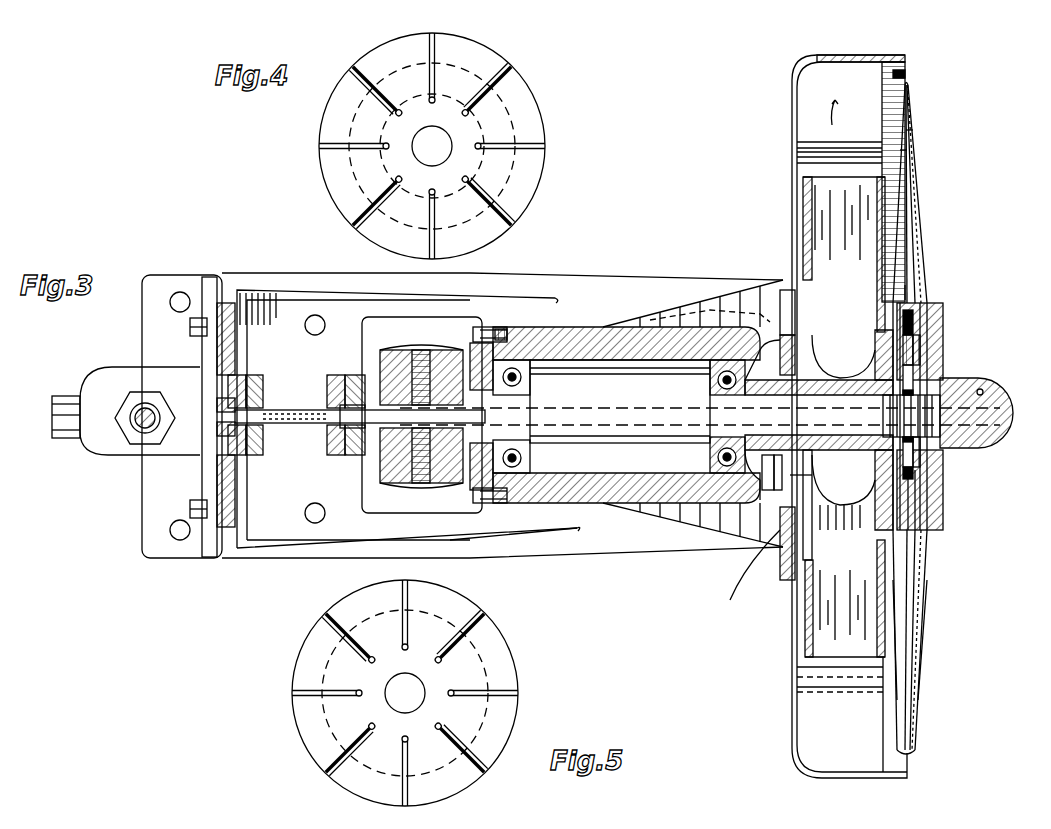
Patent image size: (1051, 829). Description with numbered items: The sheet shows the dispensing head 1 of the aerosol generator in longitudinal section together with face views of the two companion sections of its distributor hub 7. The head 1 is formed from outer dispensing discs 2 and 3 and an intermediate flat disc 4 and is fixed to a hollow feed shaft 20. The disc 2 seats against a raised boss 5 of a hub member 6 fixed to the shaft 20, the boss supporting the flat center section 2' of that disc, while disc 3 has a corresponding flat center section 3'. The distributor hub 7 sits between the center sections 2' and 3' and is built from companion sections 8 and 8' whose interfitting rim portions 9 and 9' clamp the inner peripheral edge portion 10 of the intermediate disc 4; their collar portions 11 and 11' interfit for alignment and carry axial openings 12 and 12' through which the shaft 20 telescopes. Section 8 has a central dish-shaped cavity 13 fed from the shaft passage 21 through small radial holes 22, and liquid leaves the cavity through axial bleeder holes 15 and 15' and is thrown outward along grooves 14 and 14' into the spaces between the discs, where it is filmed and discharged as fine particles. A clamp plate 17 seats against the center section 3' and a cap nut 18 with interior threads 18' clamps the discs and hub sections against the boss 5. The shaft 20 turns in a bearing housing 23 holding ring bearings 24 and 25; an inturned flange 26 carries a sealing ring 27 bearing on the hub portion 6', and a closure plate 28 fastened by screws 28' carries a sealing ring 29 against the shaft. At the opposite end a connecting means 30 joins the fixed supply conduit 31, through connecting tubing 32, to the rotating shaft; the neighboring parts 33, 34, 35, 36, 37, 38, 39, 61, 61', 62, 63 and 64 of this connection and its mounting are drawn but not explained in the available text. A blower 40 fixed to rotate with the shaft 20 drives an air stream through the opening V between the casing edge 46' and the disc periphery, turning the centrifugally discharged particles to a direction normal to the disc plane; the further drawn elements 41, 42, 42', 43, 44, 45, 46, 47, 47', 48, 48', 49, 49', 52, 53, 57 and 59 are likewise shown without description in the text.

In FIG. 3, the dispensing head 1 is at (930, 177).
In FIG. 3, the exterior dispensing disc 2 is at (929, 417).
In FIG. 3, the flat center section 2' is at (843, 356).
In FIG. 3, the exterior dispensing disc 3 is at (933, 417).
In FIG. 3, the flat center section 3' is at (939, 322).
In FIG. 3, the intermediate dispensing disc 4 is at (924, 232).
In FIG. 3, the raised boss 5 is at (878, 290).
In FIG. 3, the hub member 6 is at (819, 430).
In FIG. 3, the hub portion 6' is at (764, 420).
In FIG. 3, the distributor hub 7 is at (918, 289).
In FIG. 4, the distributor hub section 8 is at (438, 146).
In FIG. 3, the distributor hub section 8 is at (864, 620).
In FIG. 5, the distributor hub section 8' is at (413, 693).
In FIG. 3, the distributor hub section 8' is at (936, 628).
In FIG. 4, the rim portion 9 is at (443, 146).
In FIG. 3, the rim portion 9 is at (876, 500).
In FIG. 5, the rim portion 9' is at (417, 693).
In FIG. 3, the rim portion 9' is at (943, 500).
In FIG. 3, the inner peripheral edge portion 10 is at (914, 495).
In FIG. 4, the collar portion 11 is at (463, 146).
In FIG. 3, the collar portion 11 is at (941, 349).
In FIG. 5, the collar portion 11' is at (439, 693).
In FIG. 3, the collar portion 11' is at (949, 350).
In FIG. 4, the axial opening 12 is at (374, 156).
In FIG. 5, the axial opening 12' is at (341, 702).
In FIG. 4, the dish-shaped cavity 13 is at (470, 95).
In FIG. 3, the dish-shaped cavity 13 is at (893, 462).
In FIG. 4, the liquid groove 14 is at (441, 146).
In FIG. 5, the liquid groove 14' is at (410, 693).
In FIG. 3, the liquid groove 14' is at (939, 490).
In FIG. 4, the axial hole 15 is at (431, 145).
In FIG. 3, the axial hole 15 is at (876, 427).
In FIG. 5, the axial hole 15' is at (404, 692).
In FIG. 3, the axial hole 15' is at (947, 455).
In FIG. 3, the clamp plate 17 is at (944, 310).
In FIG. 3, the cap nut 18 is at (990, 413).
In FIG. 3, the interior threads 18' is at (1008, 375).
In FIG. 3, the hollow feed shaft 20 is at (614, 445).
In FIG. 3, the passage 21 is at (674, 440).
In FIG. 3, the radial holes 22 is at (884, 411).
In FIG. 3, the bearing housing 23 is at (596, 326).
In FIG. 3, the ring bearing 24 is at (530, 458).
In FIG. 3, the ring bearing 25 is at (716, 460).
In FIG. 3, the inturned flange portion 26 is at (776, 478).
In FIG. 3, the sealing ring 27 is at (774, 462).
In FIG. 3, the closure plate 28 is at (471, 411).
In FIG. 3, the screws 28' is at (511, 320).
In FIG. 3, the sealing ring 29 is at (482, 392).
In FIG. 3, the connecting device 30 is at (290, 408).
In FIG. 3, the supply conduit 31 is at (68, 396).
In FIG. 3, the connecting tubing 32 is at (282, 424).
In FIG. 3, the collar 33 is at (350, 456).
In FIG. 3, the clamp 34 is at (332, 450).
In FIG. 3, the collar 35 is at (340, 376).
In FIG. 3, the nut 36 is at (222, 434).
In FIG. 3, the bearing 37 is at (240, 378).
In FIG. 3, the mounting plate 38 is at (214, 462).
In FIG. 3, the block 39 is at (260, 378).
In FIG. 3, the blower assembly 40 is at (800, 196).
In FIG. 3, the lower inner wall 41 is at (886, 604).
In FIG. 3, the lower wall 42 is at (821, 608).
In FIG. 3, the bracket 42' is at (766, 546).
In FIG. 3, the connecting wall 43 is at (830, 628).
In FIG. 3, the opening 44 is at (836, 500).
In FIG. 3, the shroud 45 is at (790, 95).
In FIG. 3, the shroud top 46 is at (861, 44).
In FIG. 3, the casing edge 46' is at (912, 165).
In FIG. 3, the bracket 47 is at (768, 277).
In FIG. 3, the bracket 47' is at (743, 568).
In FIG. 3, the supporting arm 48 is at (693, 416).
In FIG. 3, the arm fastening 48' is at (778, 311).
In FIG. 3, the chamber 49 is at (875, 402).
In FIG. 3, the baffle 49' is at (819, 406).
In FIG. 3, the gear housing 52 is at (418, 482).
In FIG. 3, the worm gear 53 is at (404, 482).
In FIG. 3, the frame 57 is at (290, 560).
In FIG. 3, the frame bar 59 is at (594, 548).
In FIG. 3, the boss 61 is at (138, 433).
In FIG. 3, the pin 61' is at (118, 438).
In FIG. 3, the plate 62 is at (210, 300).
In FIG. 3, the screw 63 is at (190, 326).
In FIG. 3, the hatched plate 64 is at (228, 330).
In FIG. 3, the opening V is at (908, 72).